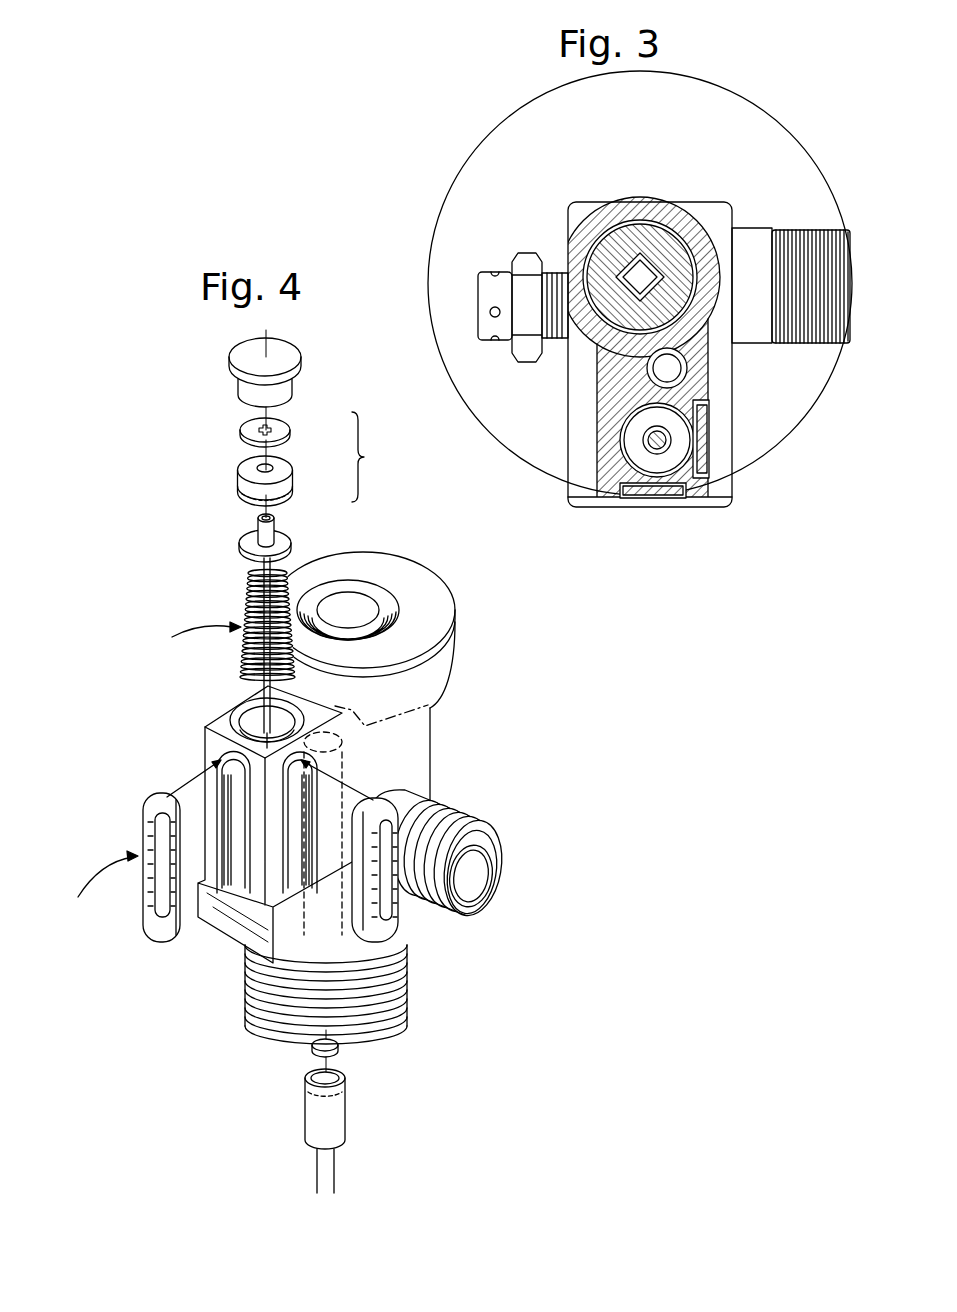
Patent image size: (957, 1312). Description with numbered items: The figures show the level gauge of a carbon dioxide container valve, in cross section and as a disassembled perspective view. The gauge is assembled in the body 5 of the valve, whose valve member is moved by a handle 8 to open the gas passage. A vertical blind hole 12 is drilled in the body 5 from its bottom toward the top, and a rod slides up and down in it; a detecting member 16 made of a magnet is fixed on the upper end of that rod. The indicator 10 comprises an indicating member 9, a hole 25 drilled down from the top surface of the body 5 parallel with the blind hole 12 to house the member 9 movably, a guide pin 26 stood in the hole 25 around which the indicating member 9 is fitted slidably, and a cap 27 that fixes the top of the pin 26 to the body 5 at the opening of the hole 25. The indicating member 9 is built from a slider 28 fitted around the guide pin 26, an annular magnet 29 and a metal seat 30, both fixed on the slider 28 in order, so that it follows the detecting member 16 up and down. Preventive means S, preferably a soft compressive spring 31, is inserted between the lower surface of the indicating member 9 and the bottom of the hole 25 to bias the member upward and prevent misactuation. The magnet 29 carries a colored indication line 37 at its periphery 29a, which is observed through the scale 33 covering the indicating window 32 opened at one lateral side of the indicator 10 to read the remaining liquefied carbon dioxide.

In FIG. 3, the body 5 is at (700, 387).
In FIG. 4, the body 5 is at (415, 755).
In FIG. 3, the handle 8 is at (783, 122).
In FIG. 4, the indicating member 9 is at (368, 457).
In FIG. 4, the indicator 10 is at (100, 892).
In FIG. 3, the vertical blind hole 12 is at (672, 371).
In FIG. 3, the detecting member 16 is at (697, 328).
In FIG. 4, the detecting member 16 is at (357, 1106).
In FIG. 3, the hole 25 is at (632, 426).
In FIG. 4, the hole 25 is at (252, 710).
In FIG. 3, the guide pin 26 is at (648, 444).
In FIG. 4, the guide pin 26 is at (285, 685).
In FIG. 4, the cap 27 is at (291, 358).
In FIG. 4, the slider 28 is at (284, 537).
In FIG. 4, the annular magnet 29 is at (295, 478).
In FIG. 4, the periphery 29a is at (245, 487).
In FIG. 4, the metal seat 30 is at (292, 432).
In FIG. 4, the soft compressive spring 31 is at (245, 611).
In FIG. 3, the indicating window 32 is at (718, 433).
In FIG. 4, the indicating window 32 is at (160, 828).
In FIG. 4, the scale 33 is at (150, 877).
In FIG. 4, the colored indication line 37 is at (252, 497).
In FIG. 4, the preventive means S is at (193, 637).